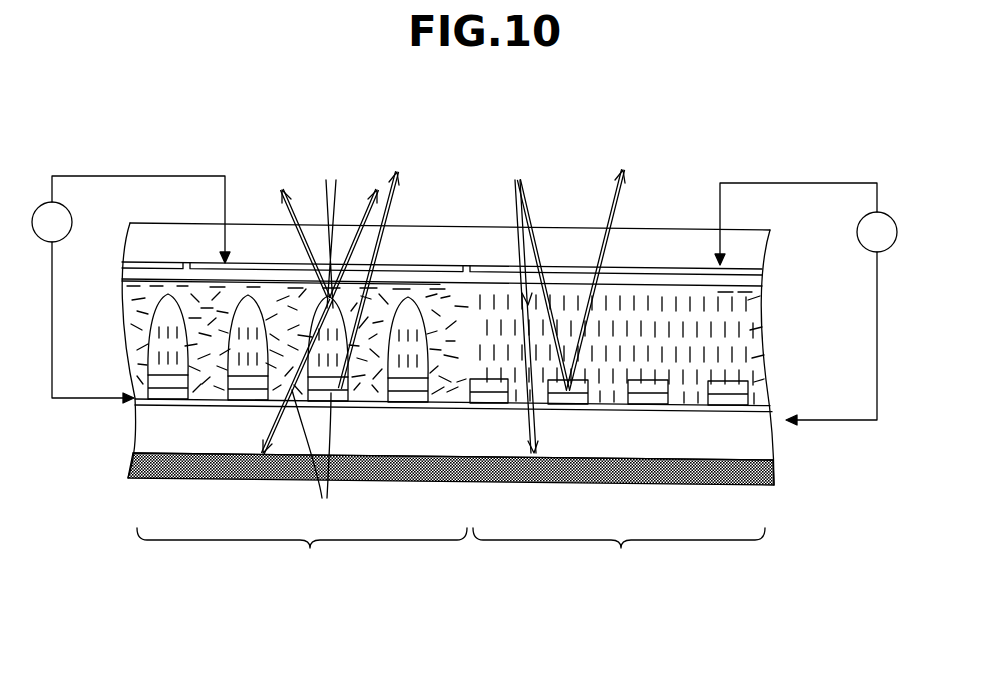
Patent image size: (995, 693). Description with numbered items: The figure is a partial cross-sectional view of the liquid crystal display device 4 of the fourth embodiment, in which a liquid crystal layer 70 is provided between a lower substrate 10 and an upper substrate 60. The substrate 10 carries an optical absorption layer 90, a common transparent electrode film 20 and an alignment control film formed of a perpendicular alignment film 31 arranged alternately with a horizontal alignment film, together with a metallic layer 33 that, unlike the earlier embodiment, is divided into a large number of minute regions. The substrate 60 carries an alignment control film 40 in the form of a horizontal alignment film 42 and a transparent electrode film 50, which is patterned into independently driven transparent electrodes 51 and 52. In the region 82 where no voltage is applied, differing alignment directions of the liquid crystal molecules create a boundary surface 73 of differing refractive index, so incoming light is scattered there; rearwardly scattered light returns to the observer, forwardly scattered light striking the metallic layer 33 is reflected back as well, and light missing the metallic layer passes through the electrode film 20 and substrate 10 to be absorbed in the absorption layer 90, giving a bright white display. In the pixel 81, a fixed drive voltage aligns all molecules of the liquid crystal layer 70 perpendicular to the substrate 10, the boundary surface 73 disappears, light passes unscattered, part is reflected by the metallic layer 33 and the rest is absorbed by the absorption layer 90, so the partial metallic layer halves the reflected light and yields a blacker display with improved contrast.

The liquid crystal display device 4 is at (464, 388).
The substrate 10 is at (758, 447).
The transparent electrode film 20 is at (750, 408).
The perpendicular alignment film 31 is at (483, 388).
The metallic layer 33 is at (745, 402).
The alignment control film 40 is at (738, 283).
The horizontal alignment film 42 is at (491, 294).
The transparent electrode film 50 is at (750, 273).
The transparent electrode 51 is at (670, 266).
The transparent electrode 52 is at (433, 265).
The substrate 60 is at (743, 250).
The liquid crystal layer 70 is at (113, 278).
The boundary surface 73 is at (247, 293).
The pixel 81 is at (619, 555).
The region 82 is at (302, 555).
The optical absorption layer 90 is at (767, 481).